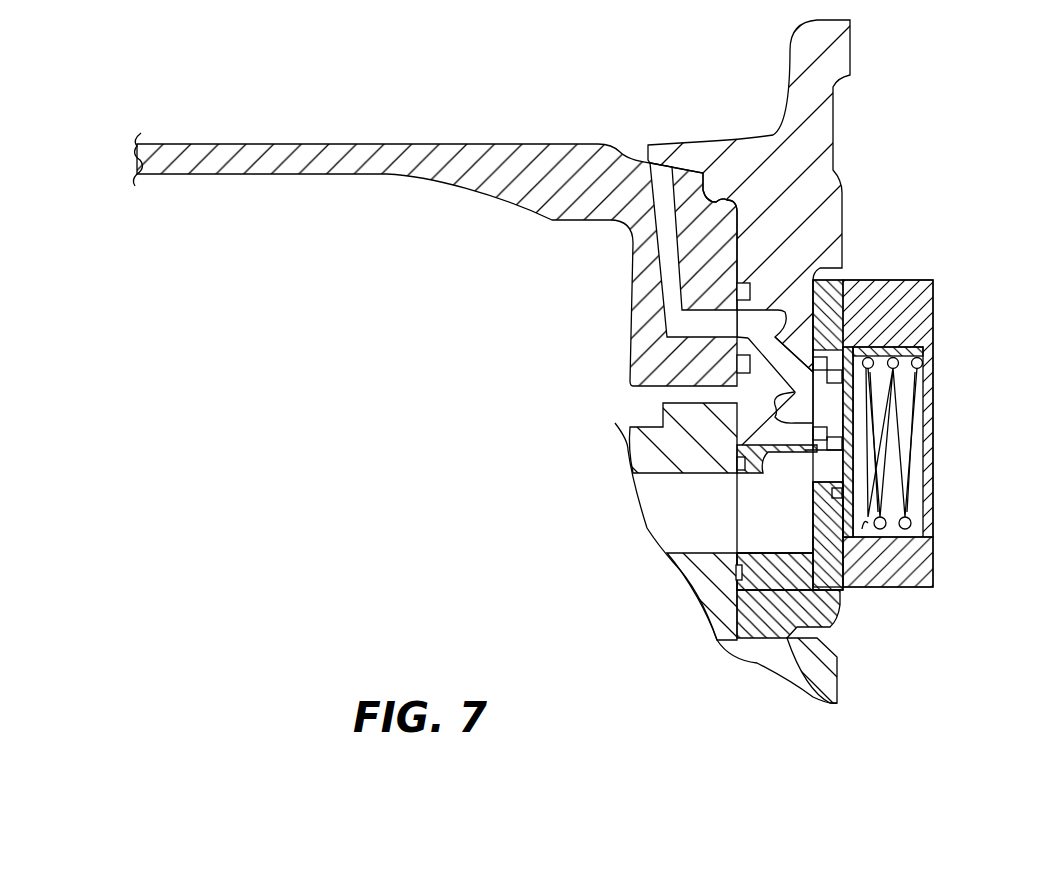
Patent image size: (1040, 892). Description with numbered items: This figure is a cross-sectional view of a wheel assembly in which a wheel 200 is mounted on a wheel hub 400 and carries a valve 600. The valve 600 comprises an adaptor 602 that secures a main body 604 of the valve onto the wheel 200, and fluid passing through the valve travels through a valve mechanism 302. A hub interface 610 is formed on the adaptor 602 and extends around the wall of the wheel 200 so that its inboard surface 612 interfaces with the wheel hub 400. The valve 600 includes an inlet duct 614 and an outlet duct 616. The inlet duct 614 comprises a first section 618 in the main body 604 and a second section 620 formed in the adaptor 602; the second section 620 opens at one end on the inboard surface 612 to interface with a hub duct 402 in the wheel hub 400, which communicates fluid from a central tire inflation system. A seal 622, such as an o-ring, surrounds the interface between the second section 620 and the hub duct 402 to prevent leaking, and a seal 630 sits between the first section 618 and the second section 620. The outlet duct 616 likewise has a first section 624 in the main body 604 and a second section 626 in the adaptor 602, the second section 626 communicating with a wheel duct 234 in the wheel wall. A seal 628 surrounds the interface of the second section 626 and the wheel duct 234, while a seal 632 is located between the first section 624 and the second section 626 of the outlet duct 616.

The wheel 200 is at (820, 138).
The wheel duct 234 is at (788, 325).
The valve mechanism 302 is at (887, 430).
The wheel hub 400 is at (837, 673).
The hub duct 402 is at (832, 490).
The valve 600 is at (893, 277).
The adaptor 602 is at (800, 596).
The main body 604 is at (920, 300).
The hub interface 610 is at (758, 577).
The inboard surface 612 is at (667, 552).
The inlet duct 614 is at (845, 455).
The outlet duct 616 is at (893, 400).
The first section 618 is at (848, 475).
The second section 620 is at (793, 537).
The seal 622 is at (737, 458).
The first section 624 is at (903, 360).
The second section 626 is at (877, 348).
The seal 628 is at (813, 362).
The seal 630 is at (733, 577).
The seal 632 is at (833, 370).